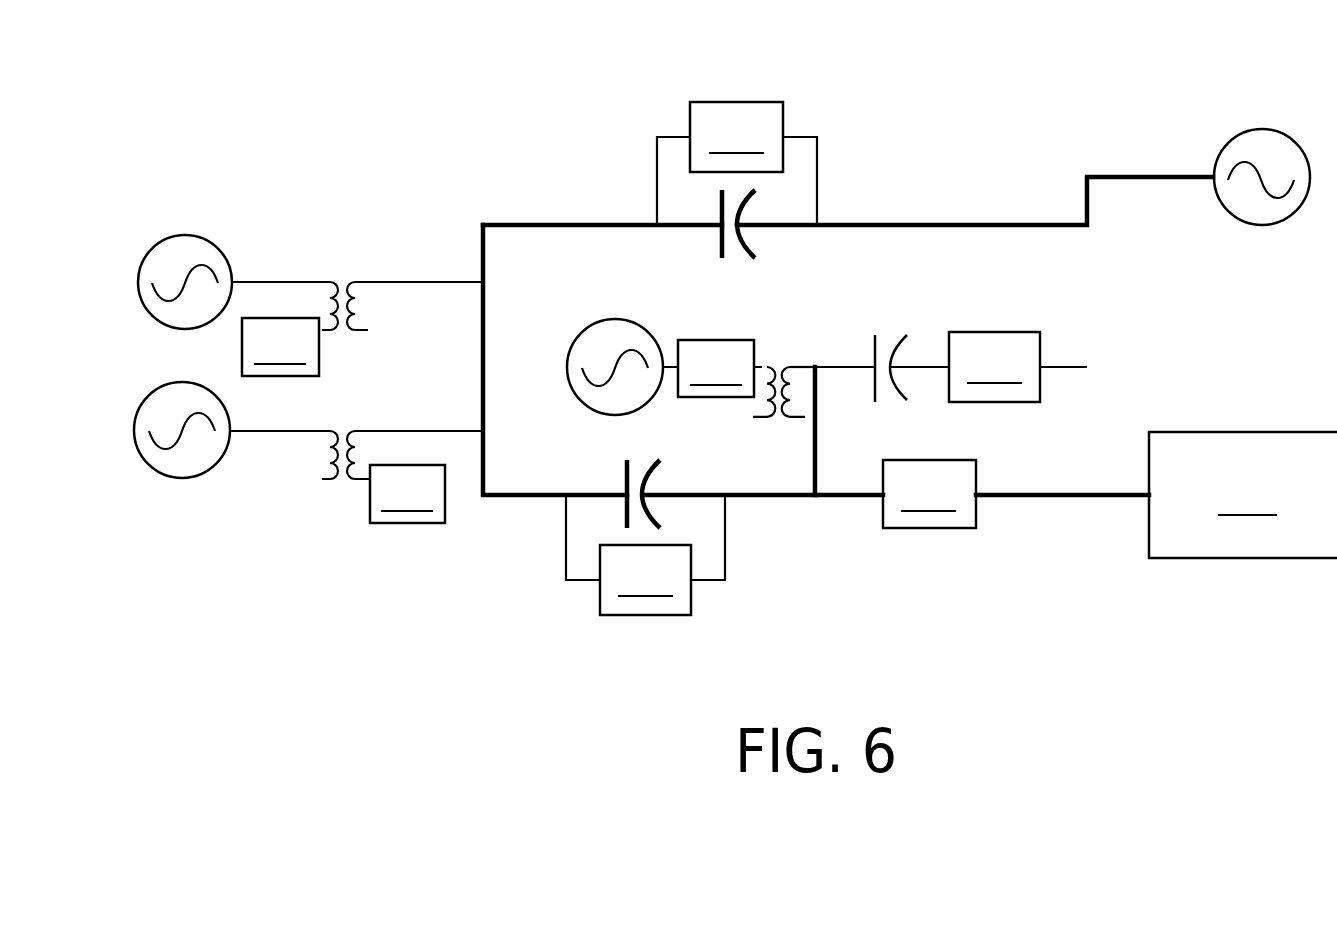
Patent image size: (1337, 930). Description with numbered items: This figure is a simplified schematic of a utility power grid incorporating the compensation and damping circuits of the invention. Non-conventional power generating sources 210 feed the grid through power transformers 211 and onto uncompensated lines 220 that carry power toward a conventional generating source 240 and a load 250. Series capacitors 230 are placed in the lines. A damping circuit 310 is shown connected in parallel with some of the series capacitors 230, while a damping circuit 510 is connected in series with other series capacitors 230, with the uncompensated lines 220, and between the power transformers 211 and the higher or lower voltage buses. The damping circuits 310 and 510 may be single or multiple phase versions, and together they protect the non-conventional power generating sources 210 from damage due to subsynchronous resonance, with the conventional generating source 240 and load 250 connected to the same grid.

The non-conventional power generating source 210 is at (157, 383).
The power transformer 211 is at (778, 362).
The uncompensated line 220 is at (543, 223).
The series capacitor 230 is at (902, 333).
The conventional generating source 240 is at (1245, 130).
The load 250 is at (1243, 495).
The damping circuit 310 is at (691, 358).
The damping circuit 510 is at (641, 423).